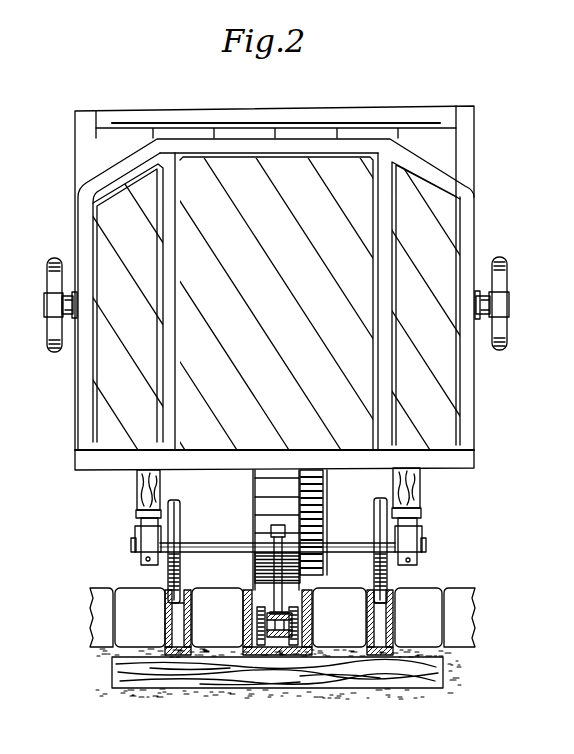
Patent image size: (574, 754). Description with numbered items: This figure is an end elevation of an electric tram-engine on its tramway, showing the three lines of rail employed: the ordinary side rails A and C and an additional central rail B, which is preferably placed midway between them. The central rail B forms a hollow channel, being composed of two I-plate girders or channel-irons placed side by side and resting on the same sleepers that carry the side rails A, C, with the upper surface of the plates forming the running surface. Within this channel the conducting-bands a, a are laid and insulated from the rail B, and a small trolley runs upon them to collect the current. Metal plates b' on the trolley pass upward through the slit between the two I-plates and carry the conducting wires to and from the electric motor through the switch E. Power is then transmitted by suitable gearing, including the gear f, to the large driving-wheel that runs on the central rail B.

The side rail A is at (178, 622).
The side rail C is at (380, 622).
The central rail B is at (267, 602).
The conducting-bands a is at (247, 643).
The metal plates b' is at (263, 569).
The switch E is at (276, 530).
The gear f is at (315, 492).